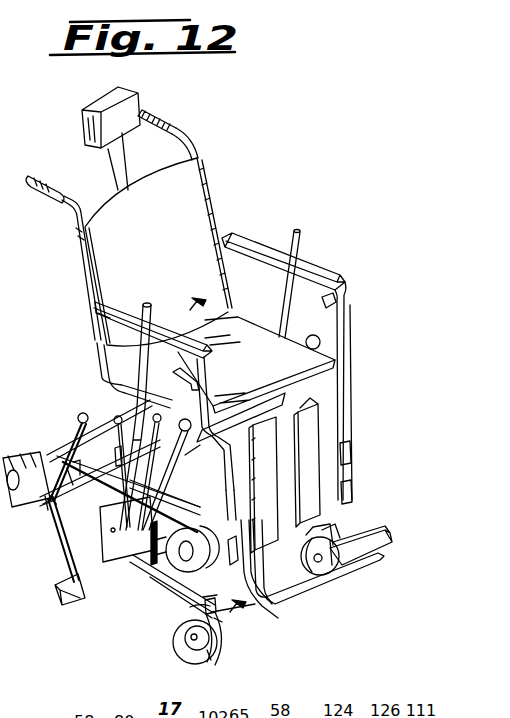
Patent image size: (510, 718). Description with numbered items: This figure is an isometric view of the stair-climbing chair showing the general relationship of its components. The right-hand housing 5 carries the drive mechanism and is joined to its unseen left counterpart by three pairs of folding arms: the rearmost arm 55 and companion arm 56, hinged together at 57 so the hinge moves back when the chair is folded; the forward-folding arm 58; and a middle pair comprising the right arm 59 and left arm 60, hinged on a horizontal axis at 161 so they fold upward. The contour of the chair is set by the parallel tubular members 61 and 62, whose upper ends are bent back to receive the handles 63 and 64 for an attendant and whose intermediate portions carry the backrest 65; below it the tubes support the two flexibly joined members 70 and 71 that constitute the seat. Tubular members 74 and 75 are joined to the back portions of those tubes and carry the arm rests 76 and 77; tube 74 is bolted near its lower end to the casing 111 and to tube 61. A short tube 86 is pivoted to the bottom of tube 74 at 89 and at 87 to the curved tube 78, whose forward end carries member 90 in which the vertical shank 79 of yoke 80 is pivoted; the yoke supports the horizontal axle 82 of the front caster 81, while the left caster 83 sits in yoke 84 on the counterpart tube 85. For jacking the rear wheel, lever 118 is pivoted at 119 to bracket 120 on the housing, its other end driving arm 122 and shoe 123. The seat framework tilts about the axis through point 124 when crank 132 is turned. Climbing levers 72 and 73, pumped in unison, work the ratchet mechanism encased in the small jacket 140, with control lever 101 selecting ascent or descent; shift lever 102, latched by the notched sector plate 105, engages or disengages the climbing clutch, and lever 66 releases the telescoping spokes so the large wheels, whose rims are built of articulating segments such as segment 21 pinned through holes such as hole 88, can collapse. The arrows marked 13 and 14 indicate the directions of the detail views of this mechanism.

The housing 5 is at (45, 516).
The section line 13 is at (223, 453).
The section line 14 is at (226, 562).
The arcuate rim segment 21 is at (40, 506).
The folding arm 55 is at (50, 452).
The folding arm 56 is at (108, 390).
The hinge 57 is at (106, 415).
The folding arm 58 is at (188, 506).
The folding arm 59 is at (167, 474).
The folding arm 60 is at (240, 412).
The tubular member 61 is at (73, 217).
The tubular member 62 is at (199, 146).
The handle 63 is at (38, 190).
The handle 64 is at (176, 128).
The backrest 65 is at (90, 260).
The lever 66 is at (148, 450).
The seat member 70 is at (184, 399).
The seat member 71 is at (282, 380).
The climbing lever 72 is at (135, 355).
The climbing lever 73 is at (287, 298).
The tubular member 74 is at (110, 326).
The tubular member 75 is at (340, 293).
The arm rest 76 is at (105, 310).
The arm rest 77 is at (345, 278).
The curved tube 78 is at (150, 574).
The vertical shank 79 is at (225, 624).
The yoke 80 is at (227, 652).
The caster 81 is at (210, 662).
The horizontal axle 82 is at (178, 646).
The caster 83 is at (345, 576).
The yoke 84 is at (355, 528).
The tube 85 is at (352, 510).
The short tube 86 is at (197, 604).
The pivot 87 is at (170, 590).
The hole 88 is at (360, 520).
The pivot 89 is at (272, 577).
The member 90 is at (192, 616).
The control lever 101 is at (320, 397).
The shift lever 102 is at (115, 450).
The sector plate 105 is at (113, 483).
The casing 111 is at (172, 535).
The lever 118 is at (74, 428).
The pivot 119 is at (96, 468).
The bracket 120 is at (106, 512).
The arm 122 is at (62, 553).
The shoe 123 is at (78, 605).
The pivot point 124 is at (135, 562).
The crank 132 is at (338, 303).
The jacket 140 is at (134, 546).
The hinge 161 is at (196, 456).